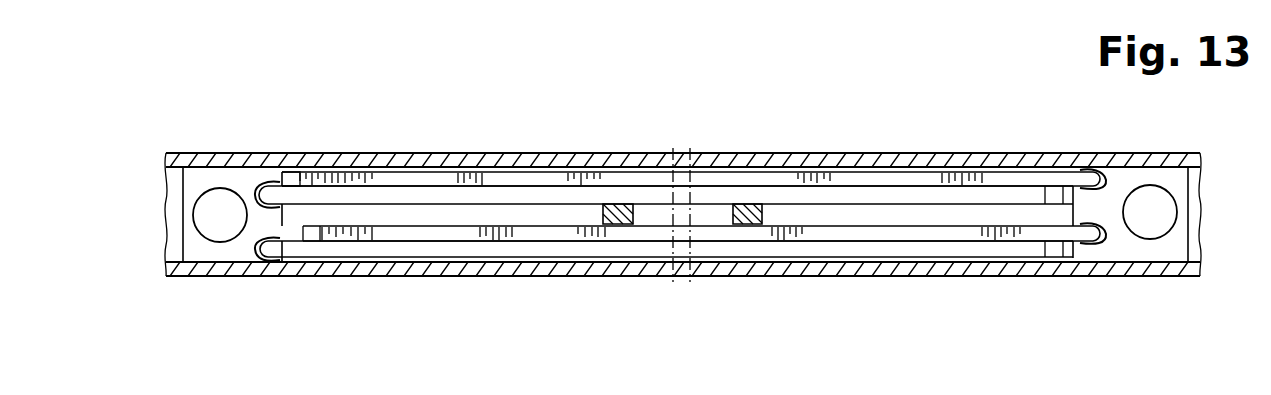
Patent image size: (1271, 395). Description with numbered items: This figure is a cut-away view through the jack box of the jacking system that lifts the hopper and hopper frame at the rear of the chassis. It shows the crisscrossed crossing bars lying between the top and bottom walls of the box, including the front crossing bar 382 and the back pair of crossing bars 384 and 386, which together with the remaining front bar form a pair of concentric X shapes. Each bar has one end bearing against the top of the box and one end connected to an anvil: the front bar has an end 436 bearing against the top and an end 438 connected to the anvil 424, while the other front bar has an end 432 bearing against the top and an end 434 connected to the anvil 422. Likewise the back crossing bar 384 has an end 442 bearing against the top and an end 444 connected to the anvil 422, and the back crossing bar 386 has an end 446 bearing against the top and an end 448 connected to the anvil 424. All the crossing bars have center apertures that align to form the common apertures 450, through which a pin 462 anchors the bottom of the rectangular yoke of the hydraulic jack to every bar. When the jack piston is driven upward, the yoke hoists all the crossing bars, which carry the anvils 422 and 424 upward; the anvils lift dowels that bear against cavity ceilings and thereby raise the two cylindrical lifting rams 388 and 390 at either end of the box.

The crossing bar 382 is at (835, 237).
The crossing bar 384 is at (552, 195).
The crossing bar 386 is at (648, 175).
The lifting ram 388 is at (210, 197).
The lifting ram 390 is at (1153, 183).
The anvil 422 is at (248, 178).
The anvil 424 is at (1123, 173).
The end of crossing bar 432 is at (1027, 248).
The end of crossing bar 434 is at (292, 253).
The end of crossing bar 436 is at (408, 235).
The end of crossing bar 438 is at (1087, 243).
The end of crossing bar 442 is at (977, 193).
The end of crossing bar 444 is at (294, 190).
The end of crossing bar 446 is at (387, 182).
The end of crossing bar 448 is at (1042, 178).
The common apertures 450 is at (680, 167).
The pin 462 is at (682, 258).